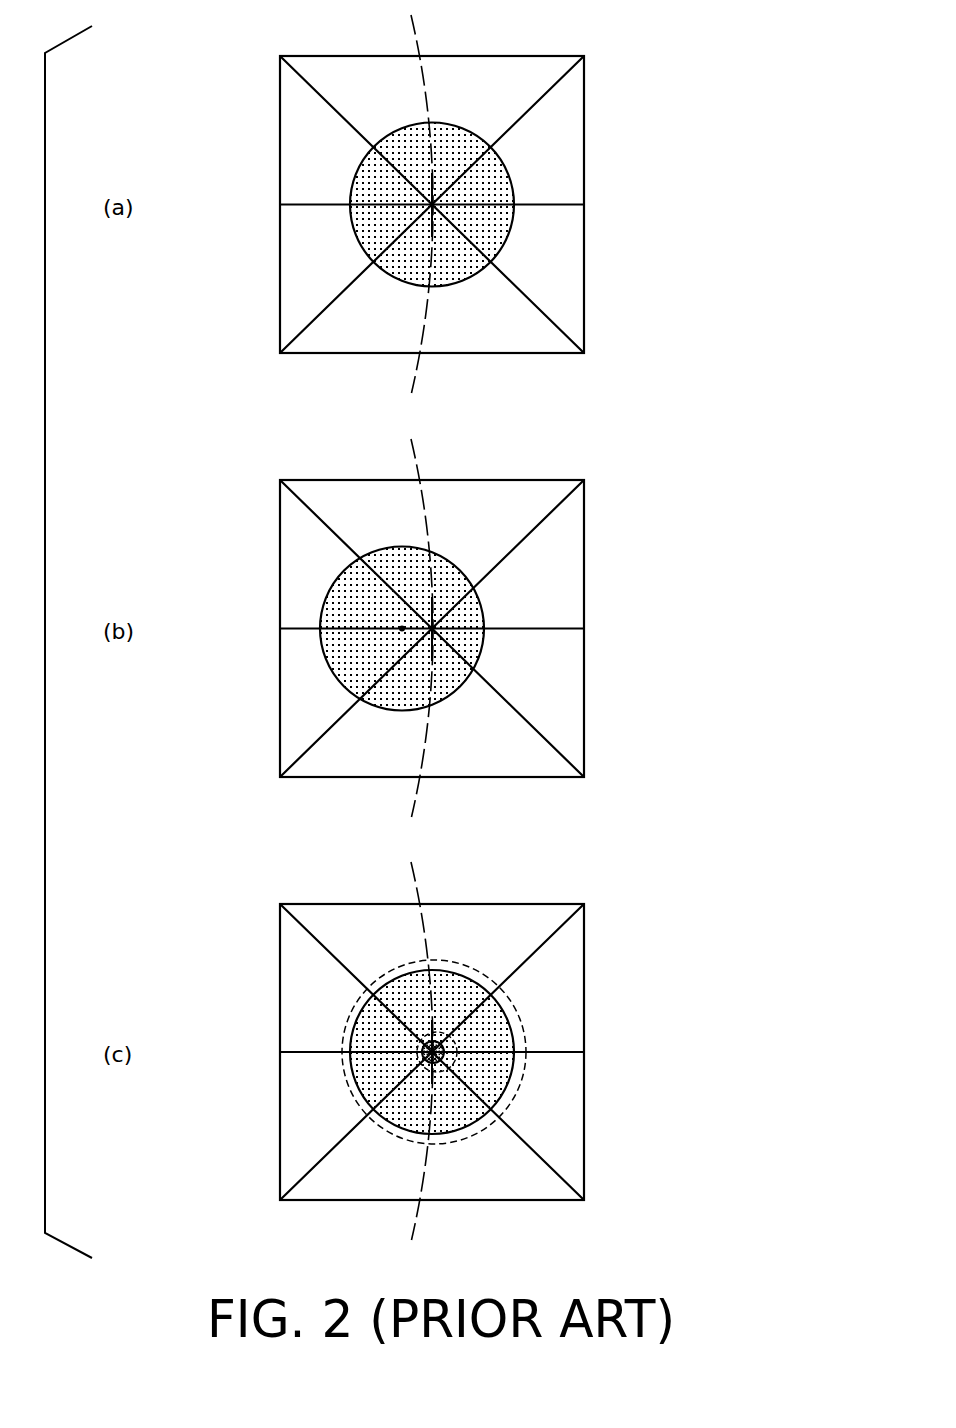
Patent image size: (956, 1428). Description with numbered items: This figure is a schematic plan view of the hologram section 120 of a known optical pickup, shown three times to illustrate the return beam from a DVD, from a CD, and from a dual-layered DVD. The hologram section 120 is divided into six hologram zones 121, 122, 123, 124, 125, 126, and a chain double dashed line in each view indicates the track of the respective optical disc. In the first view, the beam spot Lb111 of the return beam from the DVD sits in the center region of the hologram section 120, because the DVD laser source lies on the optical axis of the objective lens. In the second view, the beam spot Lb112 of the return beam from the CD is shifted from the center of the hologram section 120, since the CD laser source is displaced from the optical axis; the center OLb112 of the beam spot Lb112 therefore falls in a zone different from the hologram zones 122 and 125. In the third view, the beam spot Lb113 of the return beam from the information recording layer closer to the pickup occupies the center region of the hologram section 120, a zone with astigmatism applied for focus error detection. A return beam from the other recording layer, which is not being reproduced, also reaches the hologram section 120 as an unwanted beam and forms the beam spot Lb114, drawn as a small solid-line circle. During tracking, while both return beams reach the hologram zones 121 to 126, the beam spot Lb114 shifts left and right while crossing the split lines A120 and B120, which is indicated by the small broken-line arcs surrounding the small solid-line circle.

The hologram section 120 is at (608, 52).
The hologram zone 121 is at (283, 150).
The hologram zone 122 is at (334, 56).
The hologram zone 123 is at (583, 147).
The hologram zone 124 is at (583, 268).
The hologram zone 125 is at (333, 354).
The hologram zone 126 is at (283, 263).
The beam spot Lb111 is at (514, 218).
The beam spot Lb112 is at (484, 644).
The center of the beam spot OLb112 is at (402, 630).
The beam spot Lb113 is at (515, 1058).
The beam spot Lb114 is at (445, 1046).
The split line A120 is at (318, 941).
The split line B120 is at (548, 941).